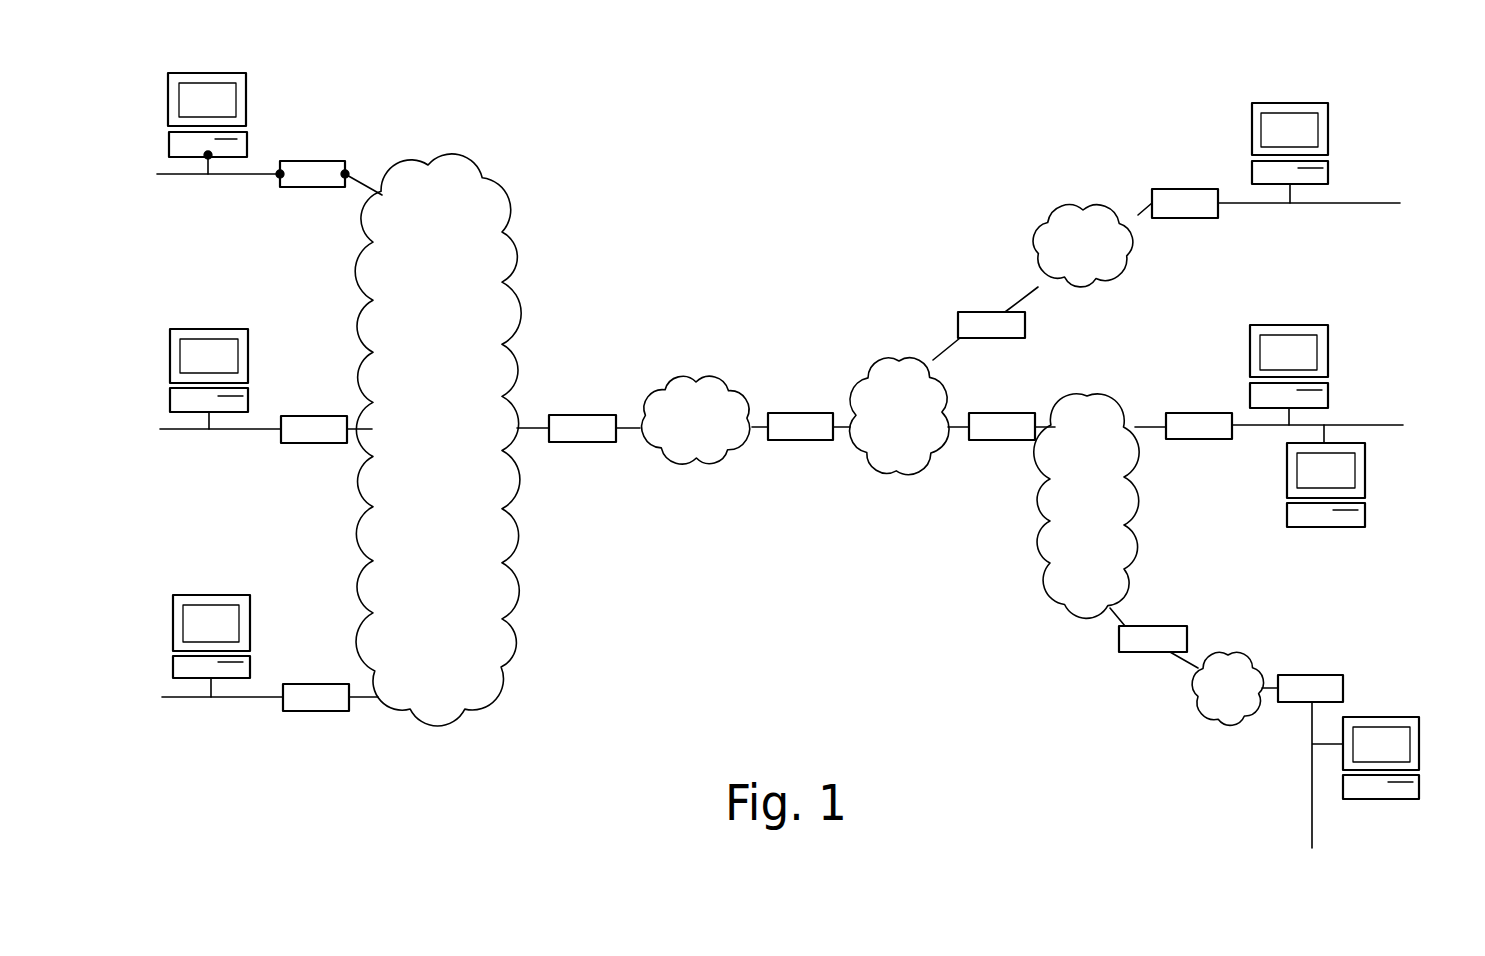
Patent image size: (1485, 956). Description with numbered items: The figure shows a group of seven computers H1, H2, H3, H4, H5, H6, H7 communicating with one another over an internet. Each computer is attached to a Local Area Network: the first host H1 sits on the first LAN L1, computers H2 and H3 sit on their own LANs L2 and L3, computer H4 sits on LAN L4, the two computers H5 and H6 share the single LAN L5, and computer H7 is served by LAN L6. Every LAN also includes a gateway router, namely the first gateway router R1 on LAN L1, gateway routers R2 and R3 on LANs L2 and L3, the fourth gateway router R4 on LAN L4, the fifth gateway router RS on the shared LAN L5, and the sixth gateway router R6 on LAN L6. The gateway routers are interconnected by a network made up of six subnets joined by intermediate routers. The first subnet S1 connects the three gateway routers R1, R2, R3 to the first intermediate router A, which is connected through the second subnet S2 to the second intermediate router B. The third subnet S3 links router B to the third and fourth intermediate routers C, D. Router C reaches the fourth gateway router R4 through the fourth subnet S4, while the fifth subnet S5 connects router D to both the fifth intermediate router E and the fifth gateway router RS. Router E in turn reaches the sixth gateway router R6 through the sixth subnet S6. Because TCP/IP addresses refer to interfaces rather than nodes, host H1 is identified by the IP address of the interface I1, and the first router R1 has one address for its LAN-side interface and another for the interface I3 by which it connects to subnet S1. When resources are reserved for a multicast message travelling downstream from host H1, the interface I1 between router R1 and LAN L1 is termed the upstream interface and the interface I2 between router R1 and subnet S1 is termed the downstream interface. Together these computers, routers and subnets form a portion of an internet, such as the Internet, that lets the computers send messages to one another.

The first host computer H1 is at (246, 90).
The computer H2 is at (248, 345).
The computer H3 is at (250, 611).
The computer H4 is at (1328, 118).
The computer H5 is at (1328, 340).
The computer H6 is at (1365, 460).
The computer H7 is at (1419, 733).
The upstream interface I1 is at (213, 153).
The downstream interface I2 is at (280, 178).
The interface I3 is at (349, 172).
The first Local Area Network L1 is at (240, 174).
The Local Area Network L2 is at (242, 429).
The Local Area Network L3 is at (243, 697).
The Local Area Network L4 is at (1320, 203).
The Local Area Network L5 is at (1367, 425).
The Local Area Network L6 is at (1312, 812).
The first gateway router R1 is at (300, 185).
The gateway router R2 is at (302, 441).
The gateway router R3 is at (304, 709).
The fourth gateway router R4 is at (1173, 215).
The fifth gateway router RS is at (1186, 438).
The sixth gateway router R6 is at (1298, 700).
The first subnet S1 is at (425, 449).
The second subnet S2 is at (684, 432).
The third subnet S3 is at (887, 436).
The fourth subnet S4 is at (1073, 254).
The fifth subnet S5 is at (1071, 524).
The sixth subnet S6 is at (1216, 699).
The first intermediate router A is at (575, 440).
The second intermediate router B is at (793, 438).
The third intermediate router C is at (984, 337).
The fourth intermediate router D is at (995, 438).
The fifth intermediate router E is at (1146, 651).